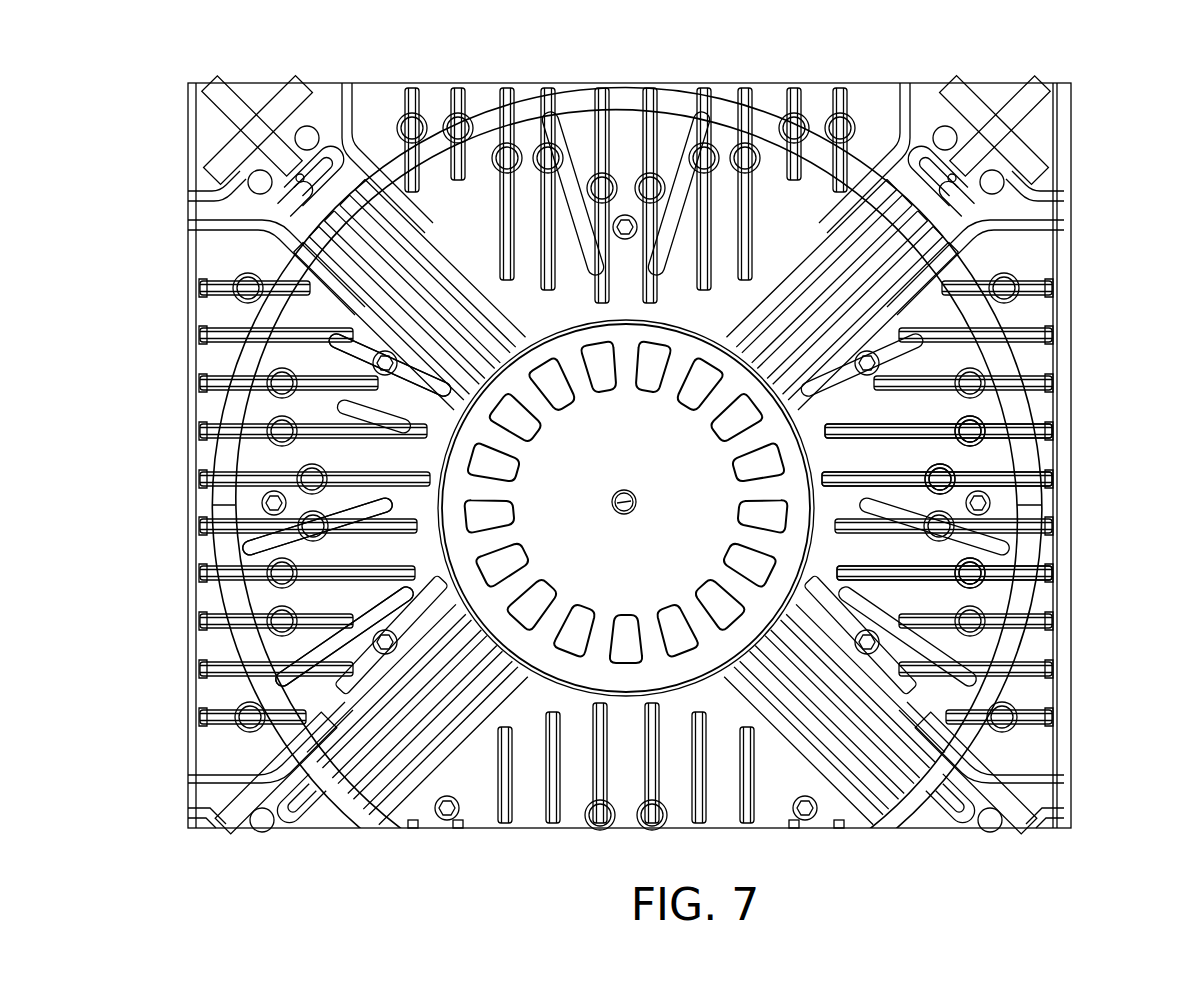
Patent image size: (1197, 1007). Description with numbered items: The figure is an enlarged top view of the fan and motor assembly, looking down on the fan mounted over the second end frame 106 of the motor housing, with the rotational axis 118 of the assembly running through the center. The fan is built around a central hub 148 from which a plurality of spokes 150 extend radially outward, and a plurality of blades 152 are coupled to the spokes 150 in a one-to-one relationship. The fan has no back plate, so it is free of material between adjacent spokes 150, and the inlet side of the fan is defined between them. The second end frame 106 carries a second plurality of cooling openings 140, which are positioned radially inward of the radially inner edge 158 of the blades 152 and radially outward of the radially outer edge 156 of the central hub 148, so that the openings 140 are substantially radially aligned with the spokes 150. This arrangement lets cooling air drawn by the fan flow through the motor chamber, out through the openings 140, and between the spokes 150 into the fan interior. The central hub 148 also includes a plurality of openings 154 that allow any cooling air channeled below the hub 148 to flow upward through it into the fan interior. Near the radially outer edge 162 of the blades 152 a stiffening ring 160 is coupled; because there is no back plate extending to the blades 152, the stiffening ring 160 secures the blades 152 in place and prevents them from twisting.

The second end frame 106 is at (1026, 257).
The rotational axis 118 is at (1040, 634).
The second plurality of cooling openings 140 is at (658, 278).
The central hub 148 is at (800, 603).
The spokes 150 is at (372, 353).
The blades 152 is at (369, 626).
The openings 154 is at (456, 481).
The radially outer edge 156 is at (1015, 568).
The radially inner edge 158 is at (1015, 476).
The stiffening ring 160 is at (1022, 439).
The radially outer edge 162 is at (1008, 411).